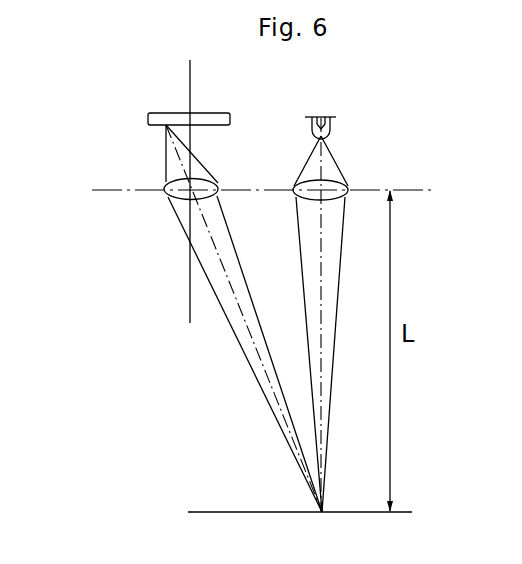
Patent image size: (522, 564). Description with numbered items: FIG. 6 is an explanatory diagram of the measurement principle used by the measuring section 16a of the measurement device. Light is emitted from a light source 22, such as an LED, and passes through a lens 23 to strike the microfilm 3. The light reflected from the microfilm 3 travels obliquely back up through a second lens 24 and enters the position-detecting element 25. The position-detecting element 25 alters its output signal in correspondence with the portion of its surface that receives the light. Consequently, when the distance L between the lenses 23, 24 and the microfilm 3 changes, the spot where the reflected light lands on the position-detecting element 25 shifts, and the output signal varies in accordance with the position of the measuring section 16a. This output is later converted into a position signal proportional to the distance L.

The surface / reference plane 3 is at (403, 512).
The optical detection unit 16a is at (112, 212).
The light source lamp 22 is at (331, 125).
The condenser lens 23 is at (335, 181).
The light receiving lens 24 is at (167, 198).
The light receiving element 25 is at (150, 116).